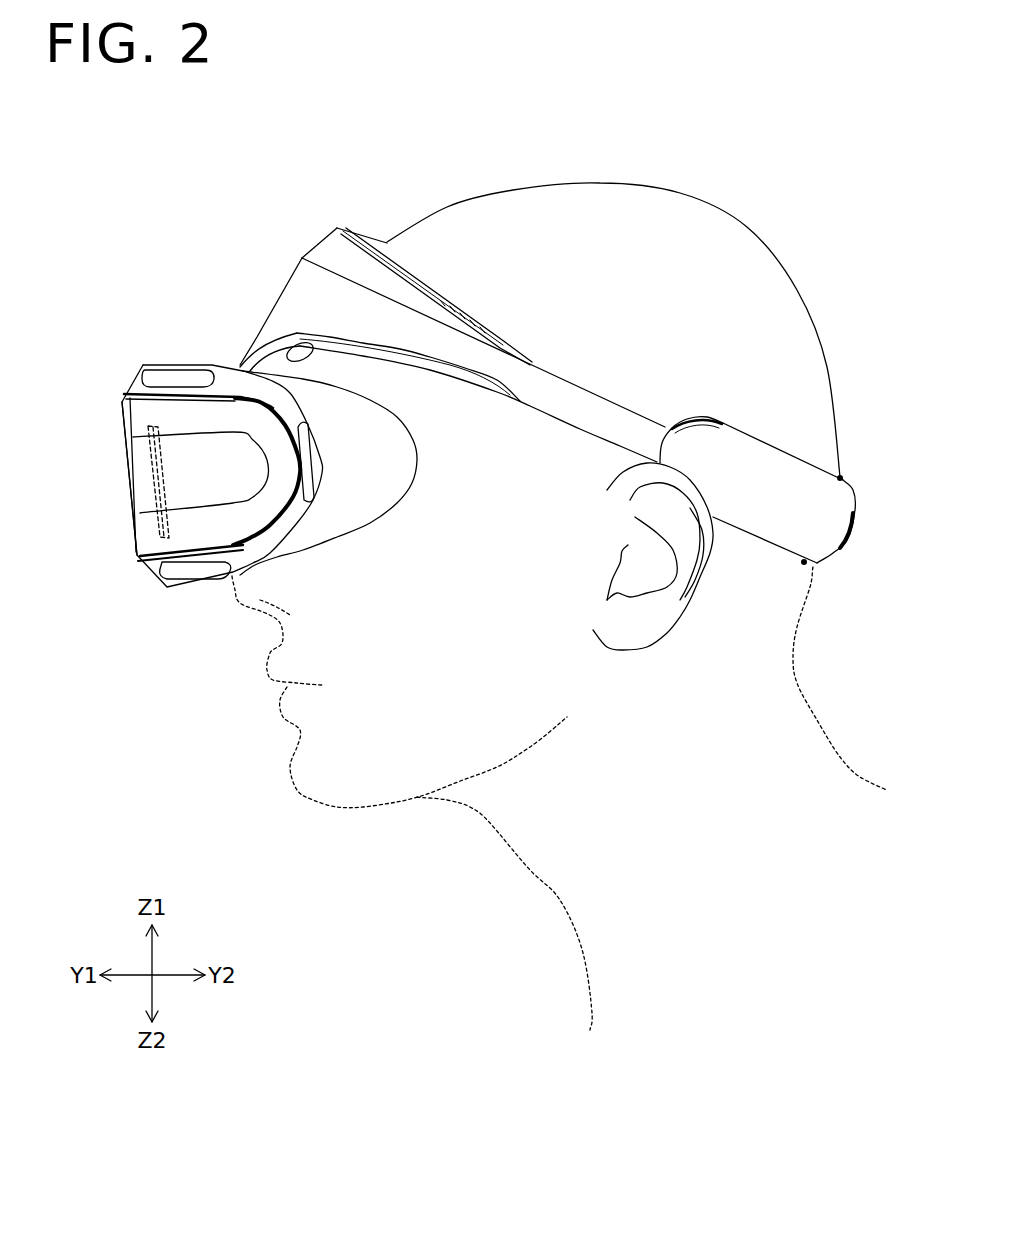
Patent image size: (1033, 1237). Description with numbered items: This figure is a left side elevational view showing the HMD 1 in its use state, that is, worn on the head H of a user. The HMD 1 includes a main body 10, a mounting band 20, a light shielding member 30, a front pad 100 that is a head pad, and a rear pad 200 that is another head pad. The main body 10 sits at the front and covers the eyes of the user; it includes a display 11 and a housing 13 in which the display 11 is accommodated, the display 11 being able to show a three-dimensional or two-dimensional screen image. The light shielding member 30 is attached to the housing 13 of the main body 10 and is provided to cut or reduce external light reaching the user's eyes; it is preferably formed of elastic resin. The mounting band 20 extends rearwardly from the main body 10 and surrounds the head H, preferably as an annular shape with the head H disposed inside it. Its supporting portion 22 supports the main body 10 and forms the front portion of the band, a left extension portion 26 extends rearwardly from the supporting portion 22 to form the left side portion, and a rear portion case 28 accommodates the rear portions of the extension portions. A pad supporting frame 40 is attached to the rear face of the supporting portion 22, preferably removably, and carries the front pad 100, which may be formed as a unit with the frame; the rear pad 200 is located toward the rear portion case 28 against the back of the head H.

The HMD 1 is at (244, 255).
The main body 10 is at (177, 423).
The display 11 is at (155, 491).
The housing 13 is at (121, 417).
The mounting band 20 is at (435, 372).
The supporting portion 22 is at (259, 334).
The left extension portion 26 is at (548, 405).
The rear portion case 28 is at (767, 456).
The light shielding member 30 is at (355, 512).
The pad supporting frame 40 is at (331, 226).
The front pad 100 is at (380, 234).
The rear pad 200 is at (722, 420).
The head H is at (634, 183).